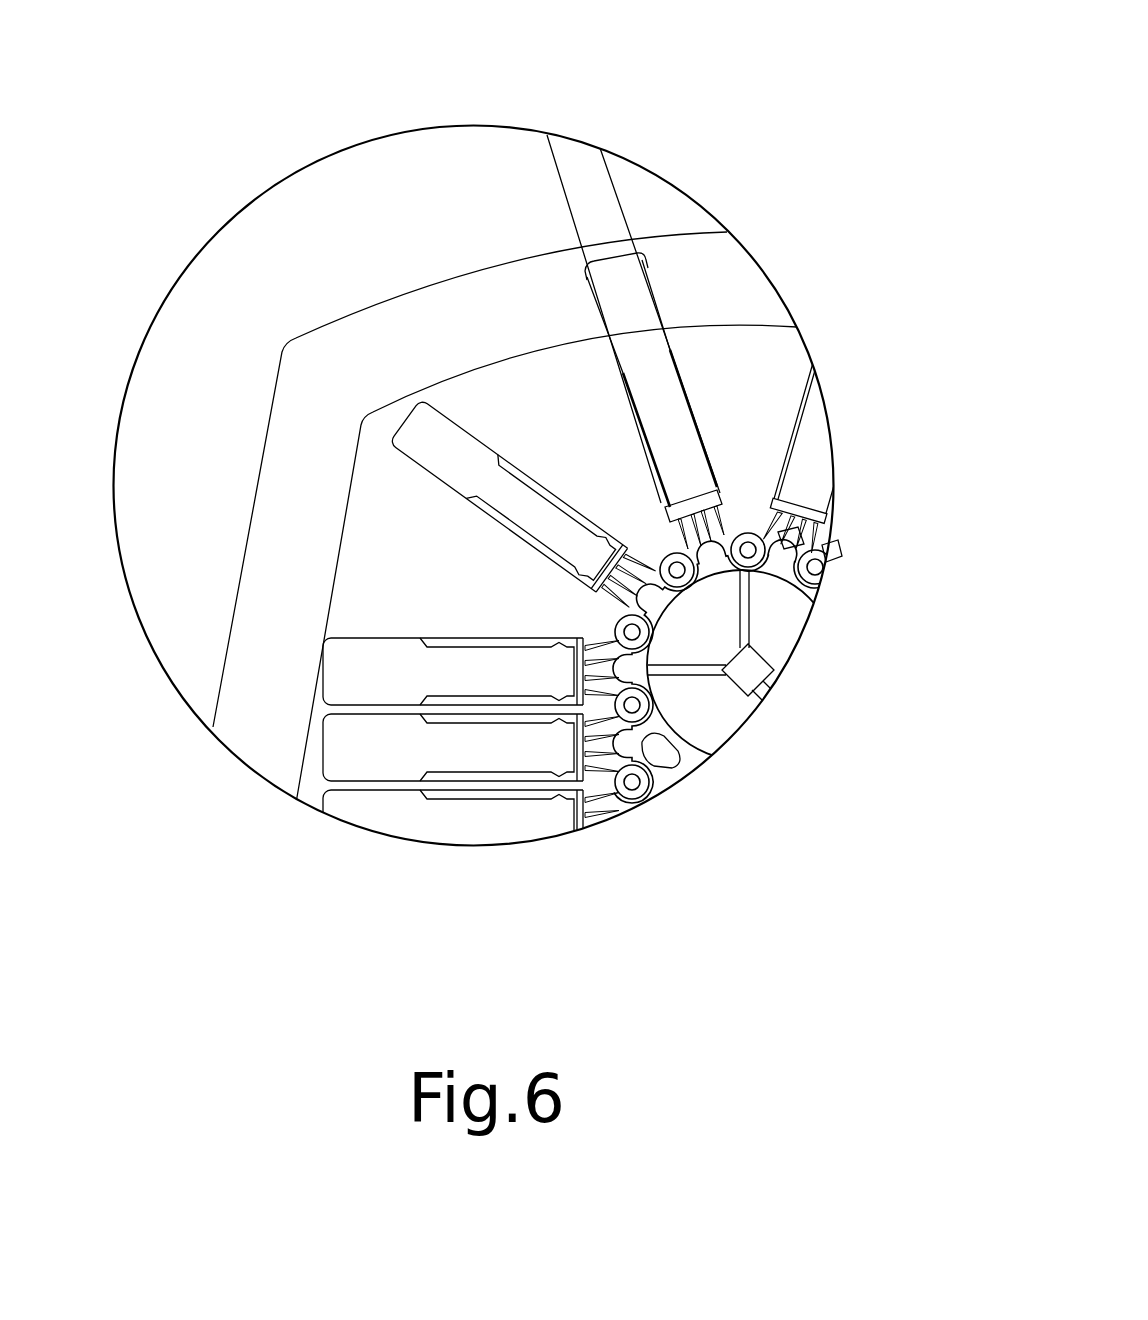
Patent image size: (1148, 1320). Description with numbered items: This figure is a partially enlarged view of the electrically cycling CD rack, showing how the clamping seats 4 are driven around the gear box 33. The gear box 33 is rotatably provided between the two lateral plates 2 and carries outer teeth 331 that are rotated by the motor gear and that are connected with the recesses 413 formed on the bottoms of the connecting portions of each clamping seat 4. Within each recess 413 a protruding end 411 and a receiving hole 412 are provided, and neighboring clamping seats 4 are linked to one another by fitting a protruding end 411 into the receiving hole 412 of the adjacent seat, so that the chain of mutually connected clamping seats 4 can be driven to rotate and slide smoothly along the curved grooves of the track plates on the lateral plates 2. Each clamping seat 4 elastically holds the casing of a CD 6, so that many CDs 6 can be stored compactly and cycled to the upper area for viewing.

The lateral plate 2 is at (320, 385).
The clamping seat 4 is at (413, 510).
The CD 6 is at (590, 200).
The gear box 33 is at (732, 694).
The outer teeth 331 is at (677, 763).
The protruding end 411 is at (750, 552).
The receiving hole 412 is at (827, 555).
The recess 413 is at (793, 543).